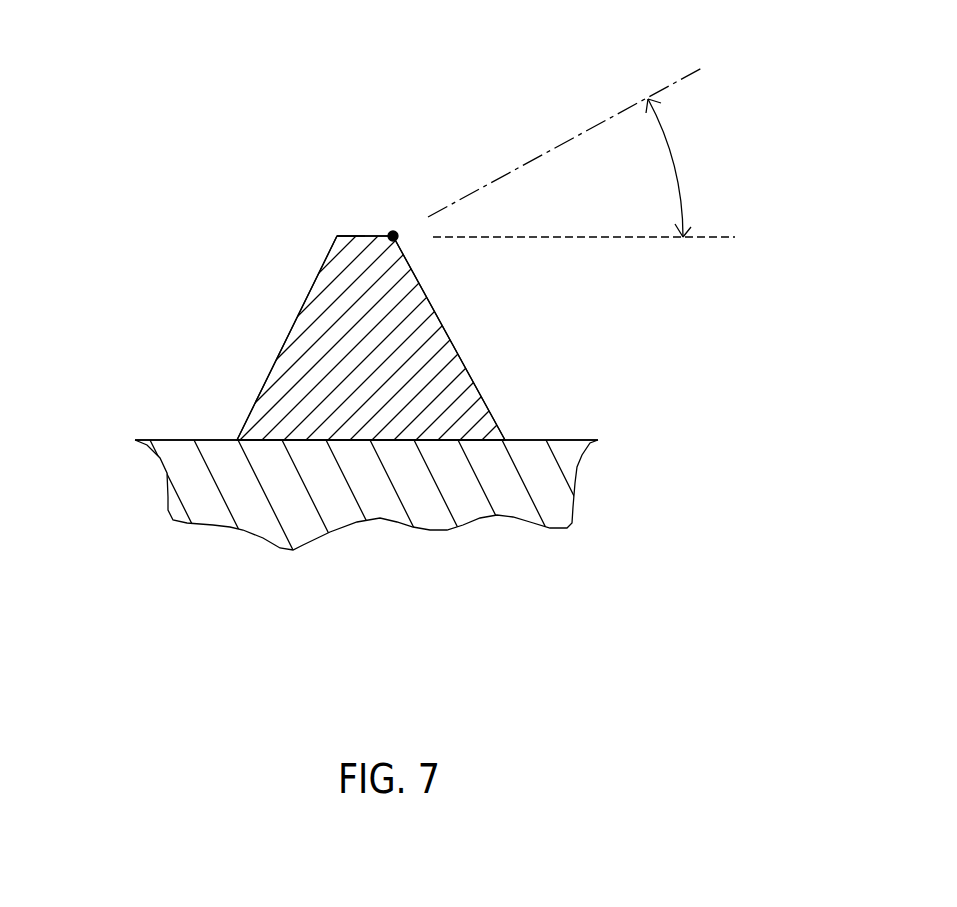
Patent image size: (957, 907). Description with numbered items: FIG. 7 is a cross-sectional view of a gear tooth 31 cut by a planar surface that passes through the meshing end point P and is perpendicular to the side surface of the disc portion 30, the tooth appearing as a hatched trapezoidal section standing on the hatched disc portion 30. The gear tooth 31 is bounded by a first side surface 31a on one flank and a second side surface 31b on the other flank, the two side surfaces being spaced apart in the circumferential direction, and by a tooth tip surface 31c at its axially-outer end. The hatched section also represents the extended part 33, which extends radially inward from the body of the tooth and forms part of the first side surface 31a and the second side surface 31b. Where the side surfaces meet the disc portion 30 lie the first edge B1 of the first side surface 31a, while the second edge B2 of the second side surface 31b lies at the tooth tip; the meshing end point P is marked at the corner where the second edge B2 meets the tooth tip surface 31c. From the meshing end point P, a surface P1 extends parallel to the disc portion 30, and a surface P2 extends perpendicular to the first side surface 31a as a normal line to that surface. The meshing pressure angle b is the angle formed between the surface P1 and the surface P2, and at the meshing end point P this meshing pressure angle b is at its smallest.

The disc portion 30 is at (363, 497).
The gear tooth 31 is at (148, 175).
The first side surface 31a is at (470, 376).
The second side surface 31b is at (266, 378).
The tooth tip surface 31c is at (365, 236).
The extended part 33 is at (310, 333).
The first edge B1 is at (237, 440).
The second edge B2 is at (337, 236).
The meshing end point P is at (393, 230).
The surface parallel to disc portion P1 is at (613, 235).
The surface perpendicular to first side surface P2 is at (592, 129).
The meshing pressure angle b is at (679, 168).